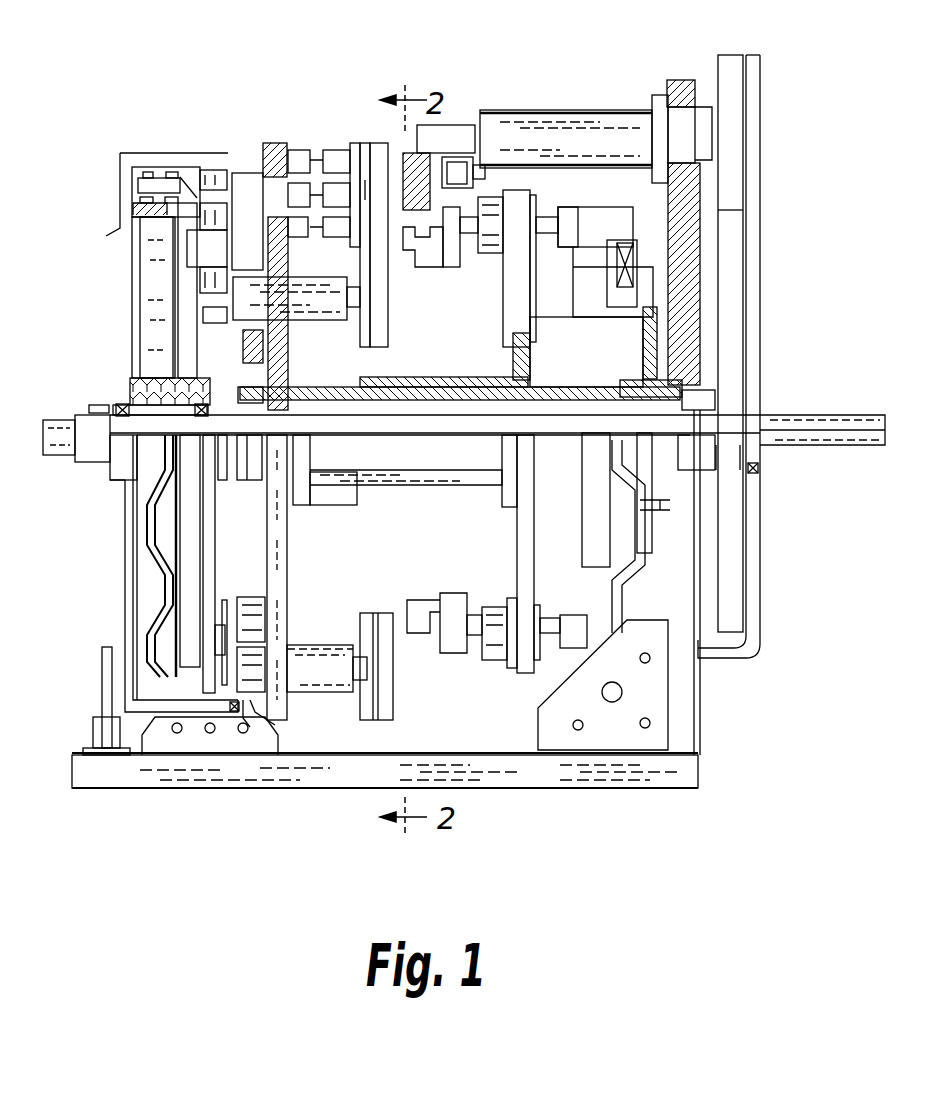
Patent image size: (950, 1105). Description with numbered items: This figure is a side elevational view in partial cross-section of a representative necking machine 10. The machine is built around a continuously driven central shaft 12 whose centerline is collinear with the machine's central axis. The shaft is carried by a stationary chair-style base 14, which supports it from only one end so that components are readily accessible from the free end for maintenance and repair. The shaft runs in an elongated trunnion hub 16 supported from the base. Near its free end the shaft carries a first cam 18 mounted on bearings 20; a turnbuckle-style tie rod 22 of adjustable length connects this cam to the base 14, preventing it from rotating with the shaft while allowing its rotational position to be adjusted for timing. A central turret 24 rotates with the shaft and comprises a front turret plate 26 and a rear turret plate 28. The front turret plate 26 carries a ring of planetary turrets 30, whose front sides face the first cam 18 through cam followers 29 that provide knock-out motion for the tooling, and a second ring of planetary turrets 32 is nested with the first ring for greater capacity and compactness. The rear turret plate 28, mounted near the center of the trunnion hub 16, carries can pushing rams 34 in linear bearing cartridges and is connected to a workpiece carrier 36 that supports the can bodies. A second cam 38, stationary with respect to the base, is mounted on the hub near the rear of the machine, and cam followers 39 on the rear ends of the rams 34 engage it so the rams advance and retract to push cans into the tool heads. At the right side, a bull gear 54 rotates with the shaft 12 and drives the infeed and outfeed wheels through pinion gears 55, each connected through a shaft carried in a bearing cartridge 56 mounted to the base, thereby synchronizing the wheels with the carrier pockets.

The necking machine 10 is at (549, 100).
The central shaft 12 is at (820, 415).
The chair-style base 14 is at (680, 717).
The trunnion hub 16 is at (703, 380).
The first cam 18 is at (133, 258).
The bearings 20 is at (120, 405).
The tie rod 22 is at (110, 677).
The central turret 24 is at (363, 470).
The front turret plate 26 is at (287, 568).
The rear turret plate 28 is at (520, 530).
The cam followers 29 is at (153, 183).
The planetary turrets 30 is at (265, 160).
The second ring of planetary turrets 32 is at (305, 307).
The can pushing rams 34 is at (537, 215).
The workpiece carrier 36 is at (417, 260).
The second cam 38 is at (633, 227).
The cam followers 39 is at (600, 215).
The bull gear 54 is at (730, 325).
The pinion gears 55 is at (730, 165).
The bearing cartridge 56 is at (515, 128).